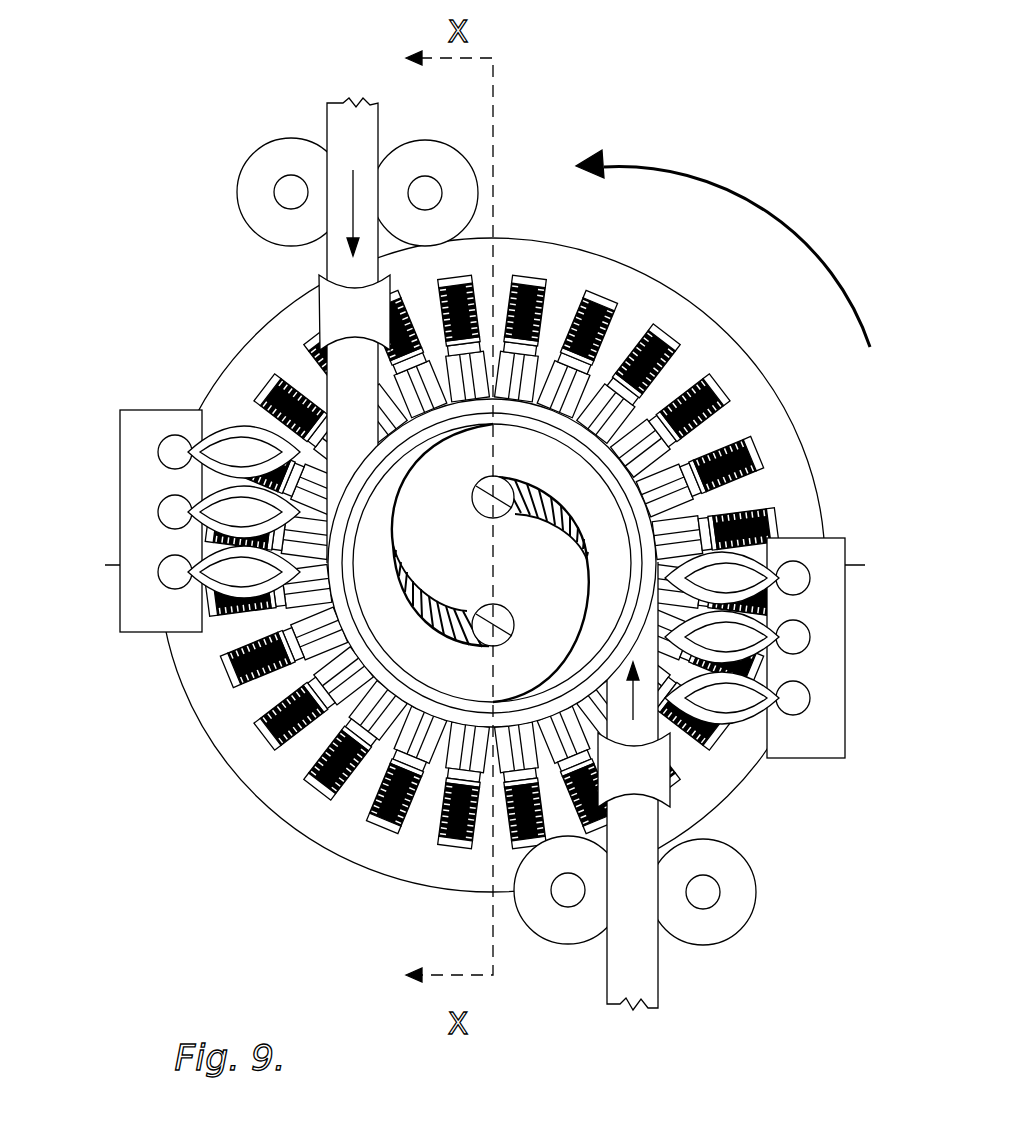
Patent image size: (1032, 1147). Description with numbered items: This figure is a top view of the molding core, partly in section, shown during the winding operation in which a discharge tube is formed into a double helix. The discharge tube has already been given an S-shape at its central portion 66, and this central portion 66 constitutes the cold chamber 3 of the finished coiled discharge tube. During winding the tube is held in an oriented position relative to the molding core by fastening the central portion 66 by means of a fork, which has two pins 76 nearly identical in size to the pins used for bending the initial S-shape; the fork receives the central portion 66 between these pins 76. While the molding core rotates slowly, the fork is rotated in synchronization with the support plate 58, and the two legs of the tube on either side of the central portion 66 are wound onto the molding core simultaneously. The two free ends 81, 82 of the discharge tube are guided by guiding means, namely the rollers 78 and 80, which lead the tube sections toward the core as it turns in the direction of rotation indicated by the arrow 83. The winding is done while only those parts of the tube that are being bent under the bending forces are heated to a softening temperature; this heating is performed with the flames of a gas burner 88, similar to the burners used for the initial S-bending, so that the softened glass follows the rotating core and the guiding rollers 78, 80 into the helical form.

The cold chamber 3 is at (503, 563).
The support plate 58 is at (302, 815).
The central portion 66 is at (470, 574).
The pins 76 is at (502, 480).
The rollers 78 is at (416, 150).
The rollers 80 is at (335, 325).
The free end 81 is at (330, 106).
The free end 82 is at (630, 977).
The direction of rotation arrow 83 is at (737, 182).
The gas burner 88 is at (135, 425).